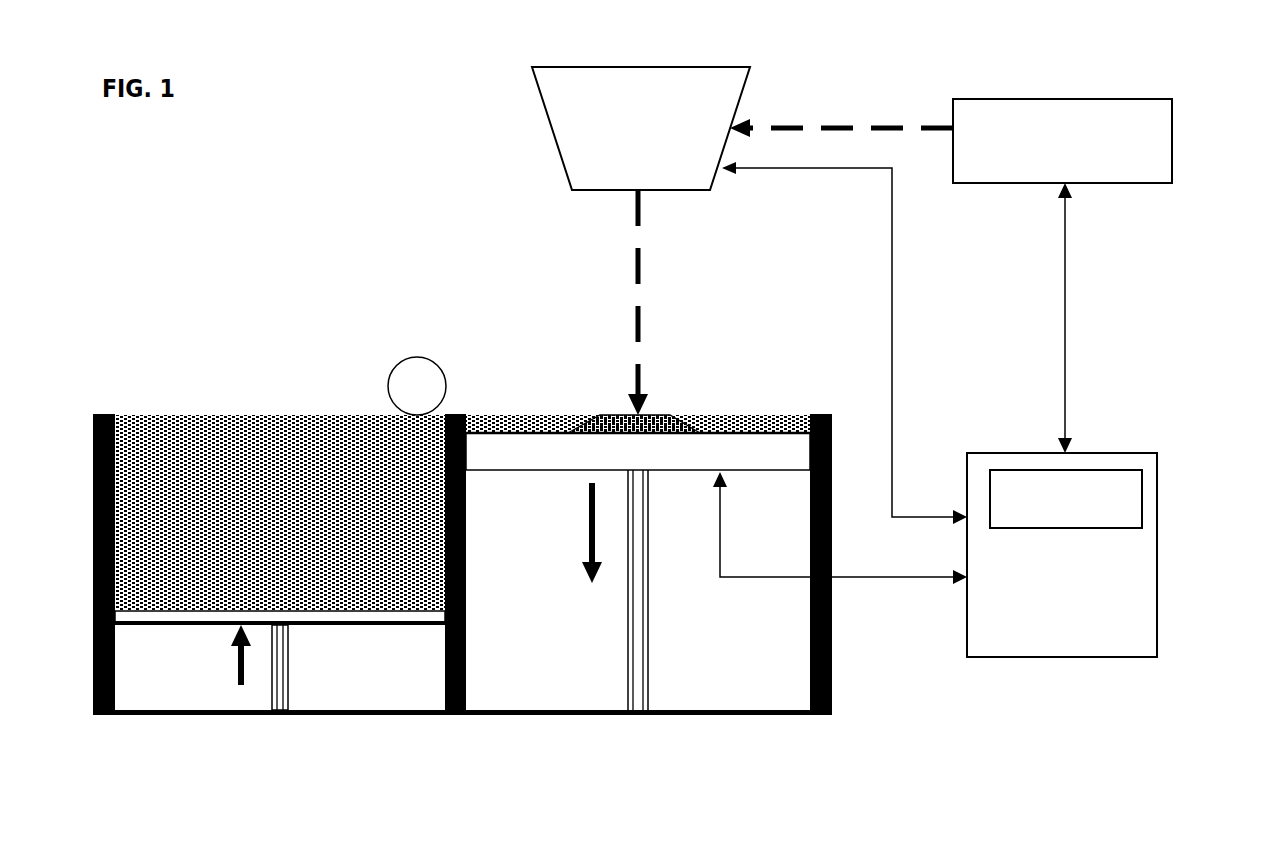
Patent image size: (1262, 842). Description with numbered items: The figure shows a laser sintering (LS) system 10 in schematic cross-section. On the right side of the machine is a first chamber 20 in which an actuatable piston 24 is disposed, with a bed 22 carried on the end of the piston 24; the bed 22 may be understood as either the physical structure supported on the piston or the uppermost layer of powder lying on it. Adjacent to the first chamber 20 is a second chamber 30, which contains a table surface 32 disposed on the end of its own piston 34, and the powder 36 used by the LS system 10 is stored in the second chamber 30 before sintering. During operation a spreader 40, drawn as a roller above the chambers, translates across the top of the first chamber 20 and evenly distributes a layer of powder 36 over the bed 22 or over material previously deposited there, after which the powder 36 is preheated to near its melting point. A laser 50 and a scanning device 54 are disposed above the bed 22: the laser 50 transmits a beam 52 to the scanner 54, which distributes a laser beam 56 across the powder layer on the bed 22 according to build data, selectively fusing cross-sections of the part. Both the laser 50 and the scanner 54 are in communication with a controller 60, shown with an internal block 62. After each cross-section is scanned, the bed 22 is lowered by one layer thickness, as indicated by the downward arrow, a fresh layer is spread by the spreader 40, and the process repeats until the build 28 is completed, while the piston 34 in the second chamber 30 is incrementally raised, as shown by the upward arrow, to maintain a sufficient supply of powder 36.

The LS system 10 is at (366, 122).
The first chamber 20 is at (545, 670).
The bed 22 is at (505, 452).
The actuatable piston 24 is at (647, 677).
The build 28 is at (603, 416).
The second chamber 30 is at (178, 687).
The table surface 32 is at (373, 618).
The piston 34 is at (290, 670).
The powder 36 is at (178, 432).
The spreader 40 is at (400, 366).
The laser 50 is at (1133, 99).
The beam 52 is at (822, 108).
The scanning device 54 is at (645, 67).
The laser beam 56 is at (645, 305).
The controller 60 is at (1113, 453).
The memory 62 is at (1115, 513).